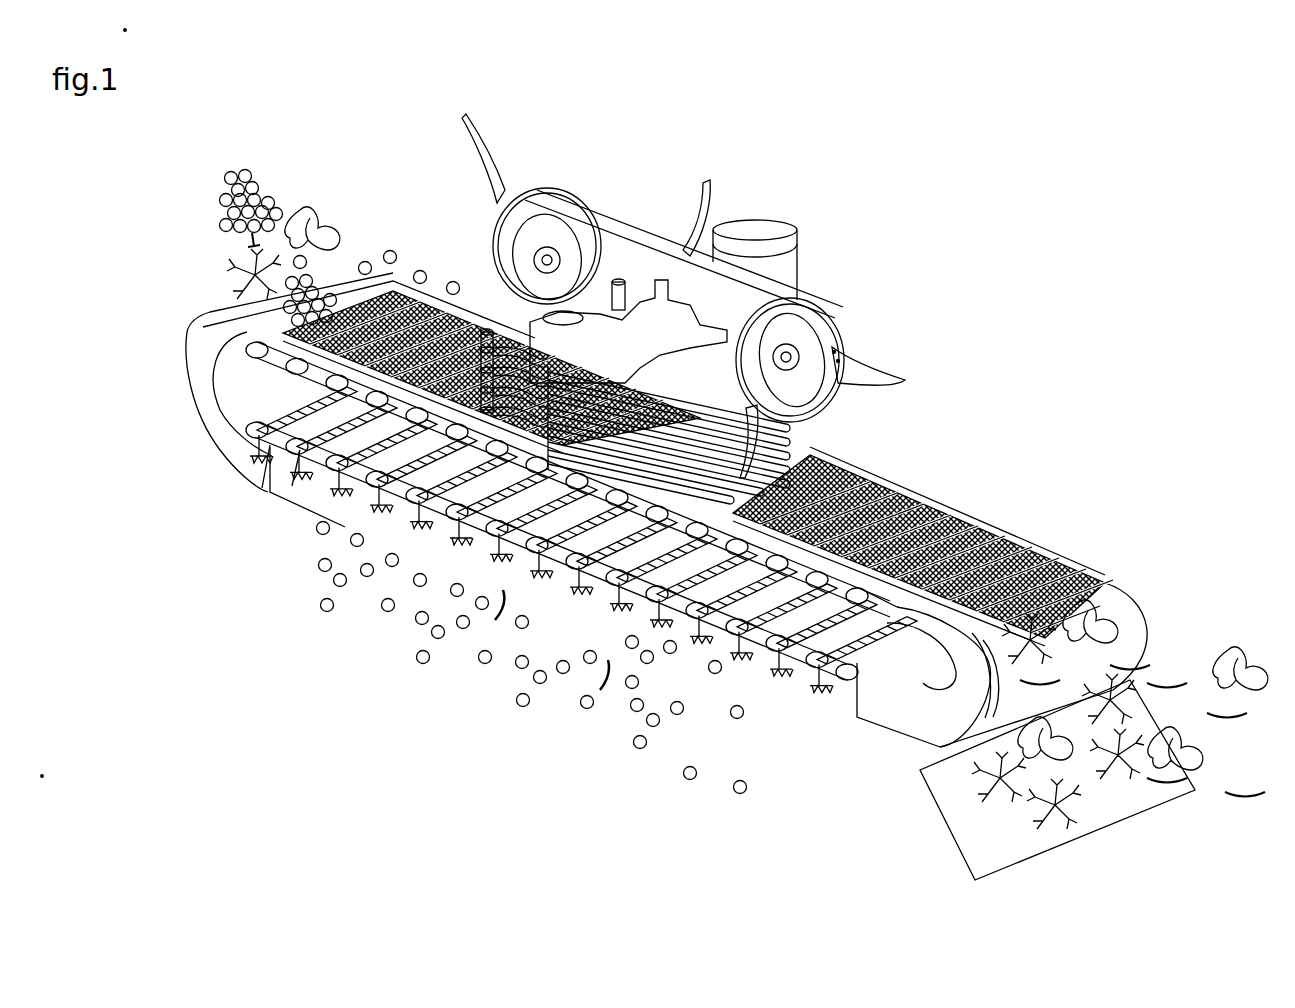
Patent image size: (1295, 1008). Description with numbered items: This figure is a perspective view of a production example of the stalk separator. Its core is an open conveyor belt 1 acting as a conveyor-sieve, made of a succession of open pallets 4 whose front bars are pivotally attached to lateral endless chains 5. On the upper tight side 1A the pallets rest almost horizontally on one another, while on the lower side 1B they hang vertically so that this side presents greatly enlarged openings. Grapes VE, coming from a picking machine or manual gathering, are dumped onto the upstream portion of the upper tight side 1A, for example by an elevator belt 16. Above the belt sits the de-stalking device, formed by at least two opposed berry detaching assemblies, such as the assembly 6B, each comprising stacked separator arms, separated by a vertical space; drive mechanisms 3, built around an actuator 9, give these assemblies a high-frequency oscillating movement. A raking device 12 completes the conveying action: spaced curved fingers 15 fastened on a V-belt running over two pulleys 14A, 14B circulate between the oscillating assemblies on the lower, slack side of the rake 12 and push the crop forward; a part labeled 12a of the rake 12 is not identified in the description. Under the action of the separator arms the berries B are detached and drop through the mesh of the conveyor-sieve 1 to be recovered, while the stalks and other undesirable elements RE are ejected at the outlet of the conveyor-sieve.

The conveyor belt 1 is at (1040, 533).
The upper tight side 1A is at (975, 528).
The lower side 1B is at (715, 648).
The drive mechanisms 3 is at (745, 203).
The open pallets 4 is at (400, 440).
The lateral endless chains 5 is at (483, 537).
The berry detaching assembly 6B is at (770, 458).
The actuator 9 is at (802, 333).
The raking device 12 is at (530, 174).
The blade 12a is at (838, 385).
The pulley 14A is at (790, 352).
The pulley 14B is at (553, 253).
The curved fingers 15 is at (493, 167).
The elevator belt 16 is at (620, 225).
The grapes VE is at (278, 198).
The berries B is at (523, 700).
The stalks and other undesirable elements RE is at (1217, 654).